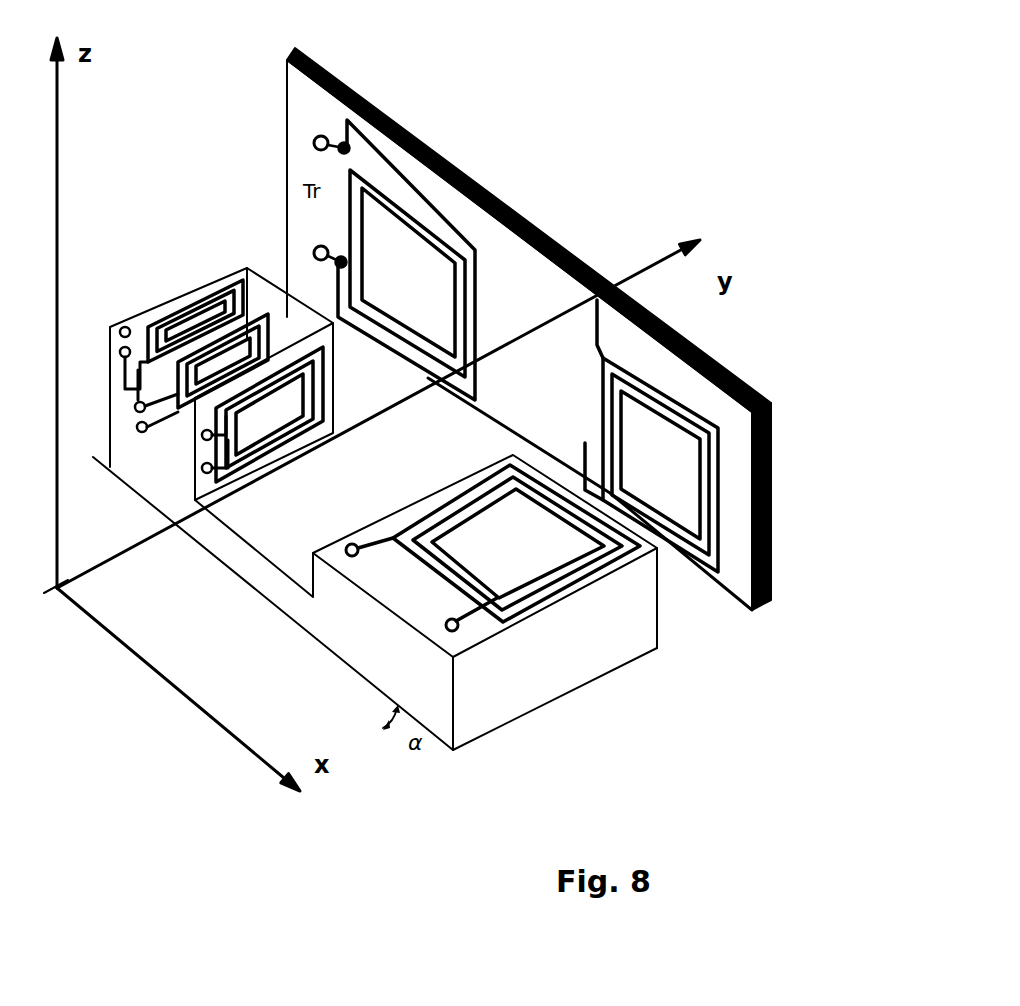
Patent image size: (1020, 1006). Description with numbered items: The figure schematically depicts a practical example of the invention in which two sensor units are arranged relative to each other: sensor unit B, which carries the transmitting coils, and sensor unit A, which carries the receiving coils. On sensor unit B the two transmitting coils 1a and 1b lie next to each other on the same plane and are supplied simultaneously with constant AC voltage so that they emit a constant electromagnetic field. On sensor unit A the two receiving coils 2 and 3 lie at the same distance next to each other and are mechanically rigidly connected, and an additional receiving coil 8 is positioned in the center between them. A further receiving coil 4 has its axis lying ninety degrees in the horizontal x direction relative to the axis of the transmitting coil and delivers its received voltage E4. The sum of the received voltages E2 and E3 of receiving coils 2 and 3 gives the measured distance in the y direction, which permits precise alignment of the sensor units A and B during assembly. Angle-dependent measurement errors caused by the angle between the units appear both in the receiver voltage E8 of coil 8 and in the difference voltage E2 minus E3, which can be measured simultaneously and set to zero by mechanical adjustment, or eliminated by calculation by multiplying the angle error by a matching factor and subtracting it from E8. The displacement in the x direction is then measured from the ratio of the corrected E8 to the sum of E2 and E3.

The transmitting coil 1a is at (427, 203).
The transmitting coil 1b is at (723, 472).
The receiving coil 2 is at (184, 304).
The receiving coil 3 is at (323, 393).
The second coil 4 is at (573, 593).
The additional receiving coil 8 is at (266, 312).
The sensor unit A is at (528, 680).
The sensor unit B is at (720, 367).
The received voltage E2 is at (110, 360).
The received voltage E3 is at (198, 444).
The received voltage E4 is at (446, 622).
The receiver voltage E8 is at (137, 414).